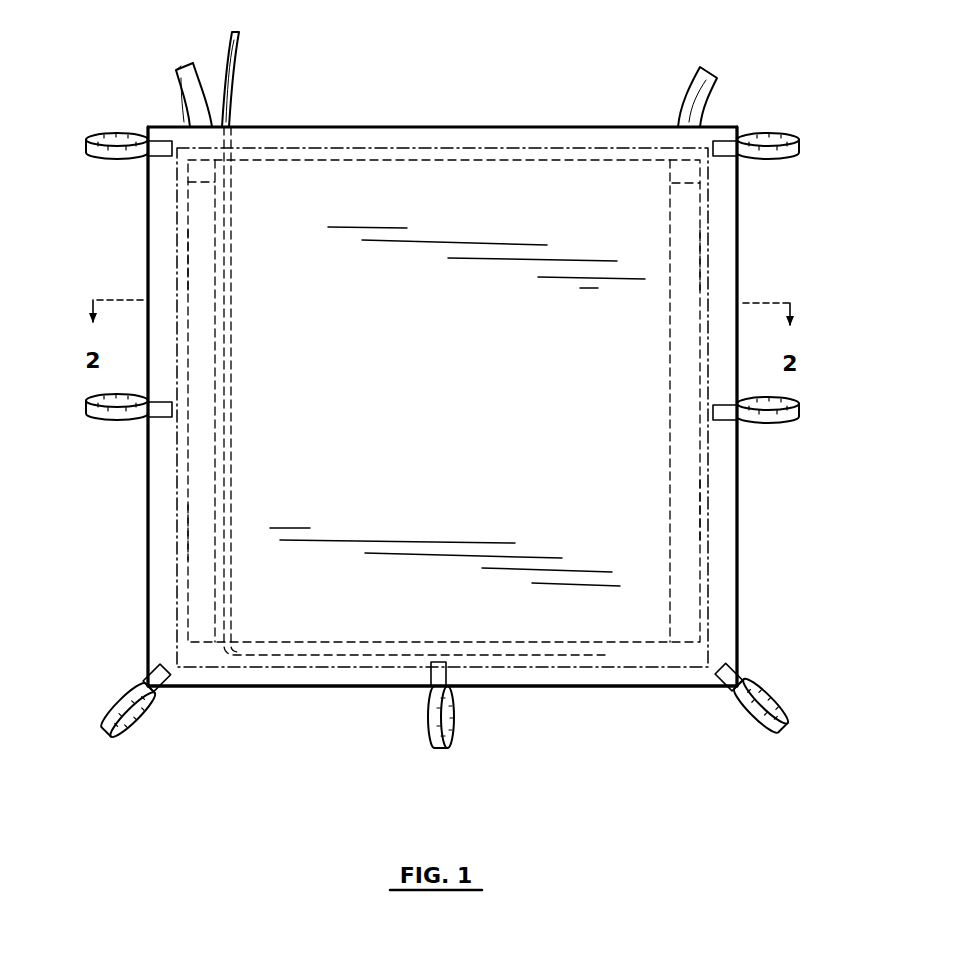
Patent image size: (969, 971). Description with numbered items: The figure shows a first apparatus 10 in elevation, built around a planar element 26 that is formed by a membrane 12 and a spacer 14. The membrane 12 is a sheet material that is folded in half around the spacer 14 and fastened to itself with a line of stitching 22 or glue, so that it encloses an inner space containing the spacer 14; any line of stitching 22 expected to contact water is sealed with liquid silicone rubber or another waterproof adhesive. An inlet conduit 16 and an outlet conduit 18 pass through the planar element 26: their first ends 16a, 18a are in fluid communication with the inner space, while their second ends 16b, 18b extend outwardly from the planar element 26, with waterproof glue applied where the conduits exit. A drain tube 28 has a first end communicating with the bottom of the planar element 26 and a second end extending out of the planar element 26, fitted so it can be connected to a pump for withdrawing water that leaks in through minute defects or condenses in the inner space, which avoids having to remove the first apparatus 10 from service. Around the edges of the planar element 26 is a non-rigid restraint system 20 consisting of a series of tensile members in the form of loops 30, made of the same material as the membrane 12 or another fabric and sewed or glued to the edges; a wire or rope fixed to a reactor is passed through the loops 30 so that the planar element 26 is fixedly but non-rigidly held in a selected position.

The first apparatus 10 is at (792, 543).
The membrane 12 is at (461, 383).
The spacer 14 is at (378, 185).
The inlet conduit 16 is at (197, 255).
The first end of inlet conduit 16a is at (197, 525).
The second end of inlet conduit 16b is at (180, 93).
The outlet conduit 18 is at (690, 257).
The first end of outlet conduit 18a is at (688, 505).
The second end of outlet conduit 18b is at (715, 80).
The non-rigid restraint system 20 is at (94, 166).
The line of stitching 22 is at (467, 149).
The planar element 26 is at (330, 730).
The drain tube 28 is at (235, 72).
The loops 30 is at (118, 171).